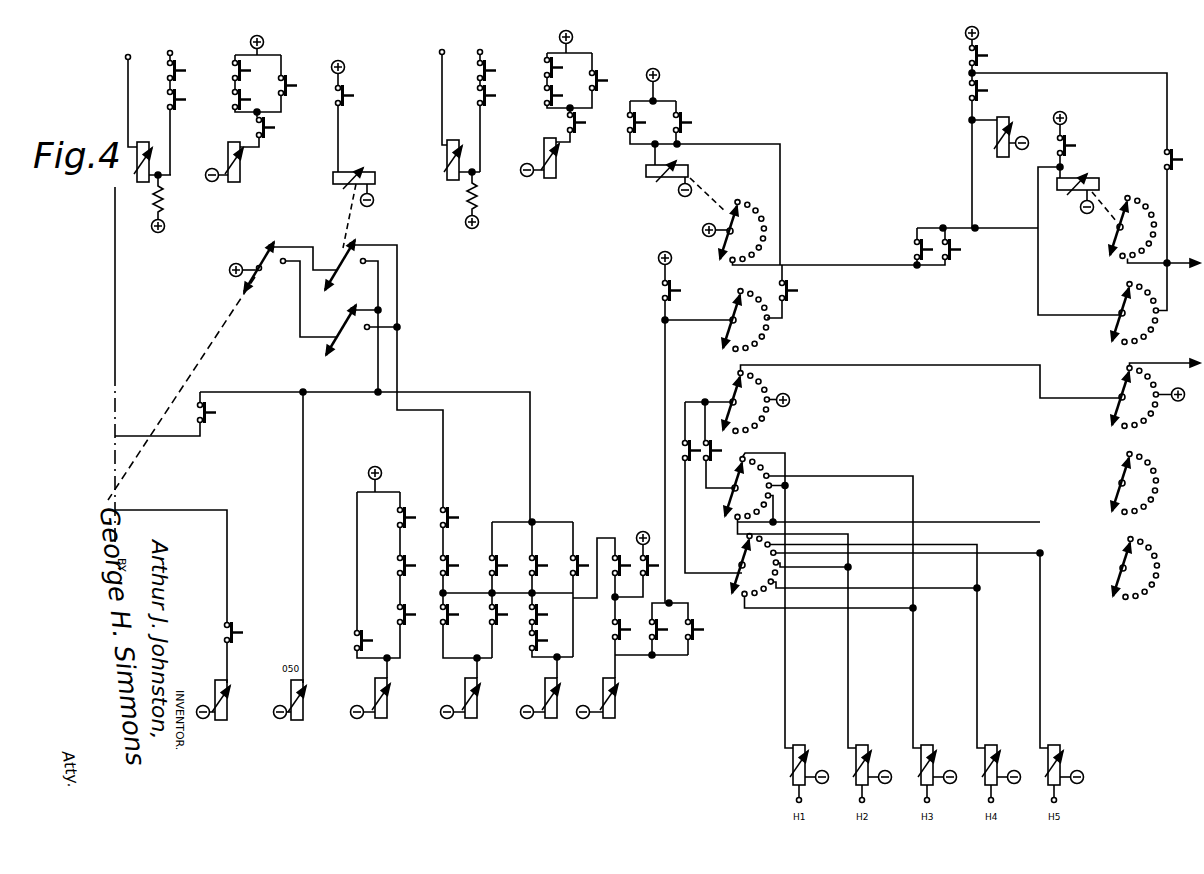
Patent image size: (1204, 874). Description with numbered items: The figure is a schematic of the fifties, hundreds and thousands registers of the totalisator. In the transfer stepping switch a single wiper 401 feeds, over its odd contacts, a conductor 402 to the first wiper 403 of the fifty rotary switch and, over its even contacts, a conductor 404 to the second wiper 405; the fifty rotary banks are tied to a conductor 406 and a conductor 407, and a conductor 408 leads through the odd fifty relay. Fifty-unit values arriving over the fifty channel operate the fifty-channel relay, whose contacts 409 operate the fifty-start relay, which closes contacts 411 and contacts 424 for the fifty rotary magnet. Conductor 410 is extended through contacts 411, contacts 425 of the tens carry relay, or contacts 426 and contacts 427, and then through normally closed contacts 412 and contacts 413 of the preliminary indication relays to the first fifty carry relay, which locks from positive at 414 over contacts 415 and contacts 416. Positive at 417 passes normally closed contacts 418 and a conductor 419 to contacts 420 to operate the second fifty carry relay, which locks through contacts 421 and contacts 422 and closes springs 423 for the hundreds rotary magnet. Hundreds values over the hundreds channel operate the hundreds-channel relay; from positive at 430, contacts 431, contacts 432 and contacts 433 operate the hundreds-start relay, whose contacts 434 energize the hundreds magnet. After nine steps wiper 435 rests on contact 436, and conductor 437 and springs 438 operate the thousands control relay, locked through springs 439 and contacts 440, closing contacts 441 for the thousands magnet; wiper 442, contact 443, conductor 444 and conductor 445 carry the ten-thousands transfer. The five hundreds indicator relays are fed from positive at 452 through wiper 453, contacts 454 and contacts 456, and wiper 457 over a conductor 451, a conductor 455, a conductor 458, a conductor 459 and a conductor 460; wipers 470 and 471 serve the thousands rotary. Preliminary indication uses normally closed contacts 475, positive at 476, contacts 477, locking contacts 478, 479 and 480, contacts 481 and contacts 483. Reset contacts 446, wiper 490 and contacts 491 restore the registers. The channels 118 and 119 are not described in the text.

The feed bar circuit 118 is at (126, 97).
The head bar circuit 119 is at (441, 80).
The wiper 401 is at (259, 264).
The conductor 402 is at (298, 260).
The wiper 403 is at (400, 270).
The conductor 404 is at (300, 314).
The wiper 405 is at (320, 344).
The conductor 406 is at (399, 354).
The conductor 407 is at (399, 288).
The conductor 408 is at (303, 463).
The contacts 409 is at (275, 128).
The conductor 410 is at (531, 424).
The contacts 411 is at (493, 556).
The normally closed contacts 412 is at (529, 613).
The normally closed contacts 413 is at (529, 641).
The positive 414 is at (645, 532).
The contacts 415 is at (657, 571).
The normally closed contacts 416 is at (630, 573).
The positive 417 is at (658, 259).
The normally closed contacts 418 is at (661, 291).
The conductor 419 is at (662, 357).
The contacts 420 is at (659, 660).
The contacts 421 is at (613, 632).
The contacts 422 is at (692, 640).
The springs 423 is at (685, 167).
The contacts 424 is at (352, 100).
The contacts 425 is at (538, 552).
The contacts 426 is at (447, 506).
The contacts 427 is at (446, 566).
The positive 430 is at (584, 68).
The contacts 431 is at (560, 70).
The contacts 432 is at (560, 98).
The contacts 433 is at (584, 130).
The normally open contacts 434 is at (696, 125).
The wiper 435 is at (724, 216).
The bank contact 436 is at (731, 263).
The conductor 437 is at (866, 264).
The springs 438 is at (946, 259).
The springs 439 is at (966, 94).
The normally closed contacts 440 is at (990, 62).
The contacts 441 is at (1058, 152).
The wiper 442 is at (1113, 231).
The bank contact 443 is at (1114, 260).
The conductor 444 is at (1182, 261).
The conductor 445 is at (1013, 232).
The reset contacts 446 is at (214, 420).
The conductor 451 is at (768, 452).
The positive 452 is at (789, 389).
The wiper 453 is at (731, 380).
The contacts 454 is at (703, 463).
The conductor 455 is at (823, 532).
The contacts 456 is at (683, 449).
The wiper 457 is at (746, 540).
The conductor 458 is at (868, 476).
The conductor 459 is at (955, 541).
The conductor 460 is at (700, 490).
The wiper 470 is at (1118, 471).
The wiper 471 is at (1120, 559).
The normally closed contacts 475 is at (244, 634).
The positive 476 is at (376, 576).
The contacts 477 is at (358, 642).
The contacts 478 is at (398, 614).
The contacts 479 is at (398, 566).
The contacts 480 is at (397, 520).
The contacts 481 is at (578, 552).
The contacts 483 is at (506, 647).
The wiper 490 is at (727, 308).
The contacts 491 is at (798, 292).